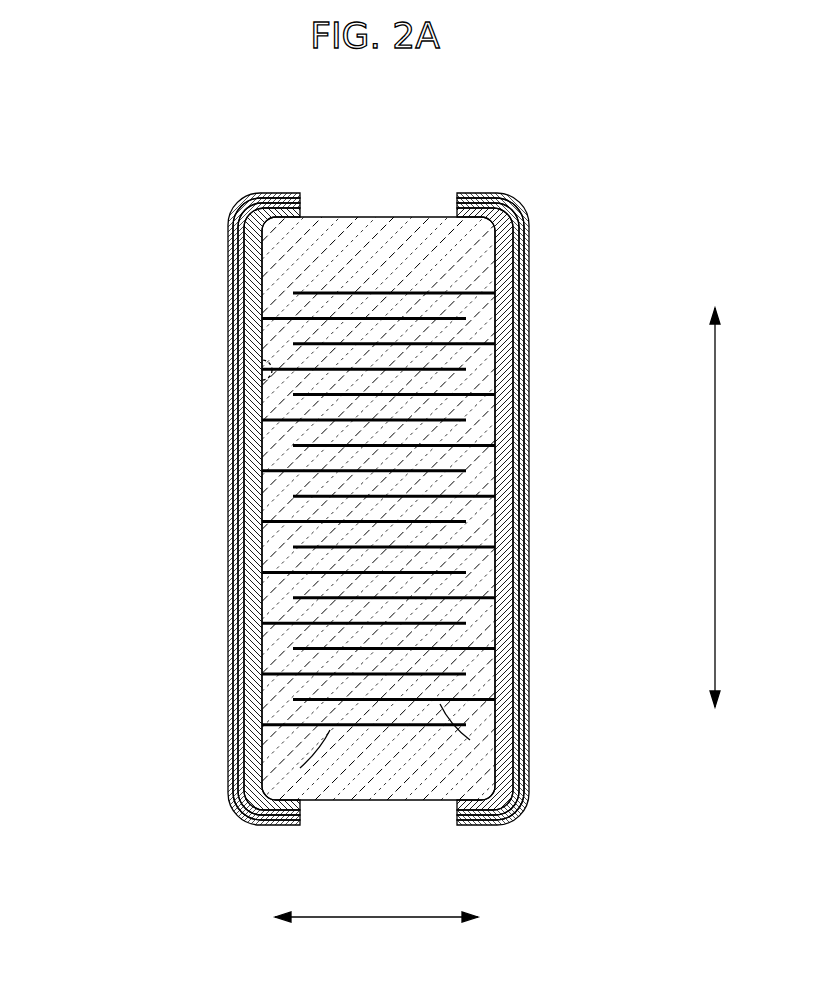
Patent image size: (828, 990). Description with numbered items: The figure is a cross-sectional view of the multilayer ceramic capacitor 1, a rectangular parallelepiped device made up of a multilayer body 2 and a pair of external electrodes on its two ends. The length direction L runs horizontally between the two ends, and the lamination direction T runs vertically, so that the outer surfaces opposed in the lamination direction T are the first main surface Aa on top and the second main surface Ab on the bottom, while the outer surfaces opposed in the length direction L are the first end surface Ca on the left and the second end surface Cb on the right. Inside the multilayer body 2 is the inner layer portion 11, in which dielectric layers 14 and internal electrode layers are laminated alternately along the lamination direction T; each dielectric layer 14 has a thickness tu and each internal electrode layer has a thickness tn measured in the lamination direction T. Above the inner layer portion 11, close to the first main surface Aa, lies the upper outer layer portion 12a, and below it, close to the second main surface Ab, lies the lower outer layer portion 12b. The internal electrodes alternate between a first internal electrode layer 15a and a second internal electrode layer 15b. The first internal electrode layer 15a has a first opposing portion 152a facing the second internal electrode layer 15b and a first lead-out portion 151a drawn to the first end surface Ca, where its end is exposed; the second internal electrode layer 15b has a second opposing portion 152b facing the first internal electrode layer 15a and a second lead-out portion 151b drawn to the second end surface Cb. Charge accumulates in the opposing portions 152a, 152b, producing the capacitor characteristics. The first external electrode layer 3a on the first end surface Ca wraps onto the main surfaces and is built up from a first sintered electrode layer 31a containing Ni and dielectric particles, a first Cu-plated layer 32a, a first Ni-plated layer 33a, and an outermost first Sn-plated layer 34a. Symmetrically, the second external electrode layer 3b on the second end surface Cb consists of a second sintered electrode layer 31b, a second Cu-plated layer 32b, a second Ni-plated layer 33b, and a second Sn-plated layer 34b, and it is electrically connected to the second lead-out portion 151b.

The multilayer ceramic capacitor 1 is at (507, 128).
The multilayer body 2 is at (414, 211).
The first external electrode layer 3a is at (160, 97).
The second external electrode layer 3b is at (624, 296).
The first sintered electrode layer 31a is at (247, 216).
The first Cu-plated layer 32a is at (253, 203).
The first Ni-plated layer 33a is at (267, 203).
The first Sn-plated layer 34a is at (290, 193).
The second sintered electrode layer 31b is at (505, 323).
The second Cu-plated layer 32b is at (515, 350).
The second Ni-plated layer 33b is at (520, 381).
The second Sn-plated layer 34b is at (528, 410).
The inner layer portion 11 is at (84, 292).
The upper outer layer portion 12a is at (228, 292).
The lower outer layer portion 12b is at (228, 799).
The dielectric layer 14 is at (455, 612).
The first internal electrode layer 15a is at (253, 911).
The second internal electrode layer 15b is at (628, 735).
The first lead-out portion 151a is at (270, 730).
The first opposing portion 152a is at (330, 730).
The second lead-out portion 151b is at (477, 705).
The second opposing portion 152b is at (440, 705).
The first main surface Aa is at (343, 215).
The second main surface Ab is at (412, 802).
The first end surface Ca is at (262, 495).
The second end surface Cb is at (497, 515).
The lamination direction T is at (722, 507).
The length direction L is at (376, 933).
The thickness of the dielectric layer tu is at (204, 423).
The thickness of the internal electrode layer tn is at (204, 442).